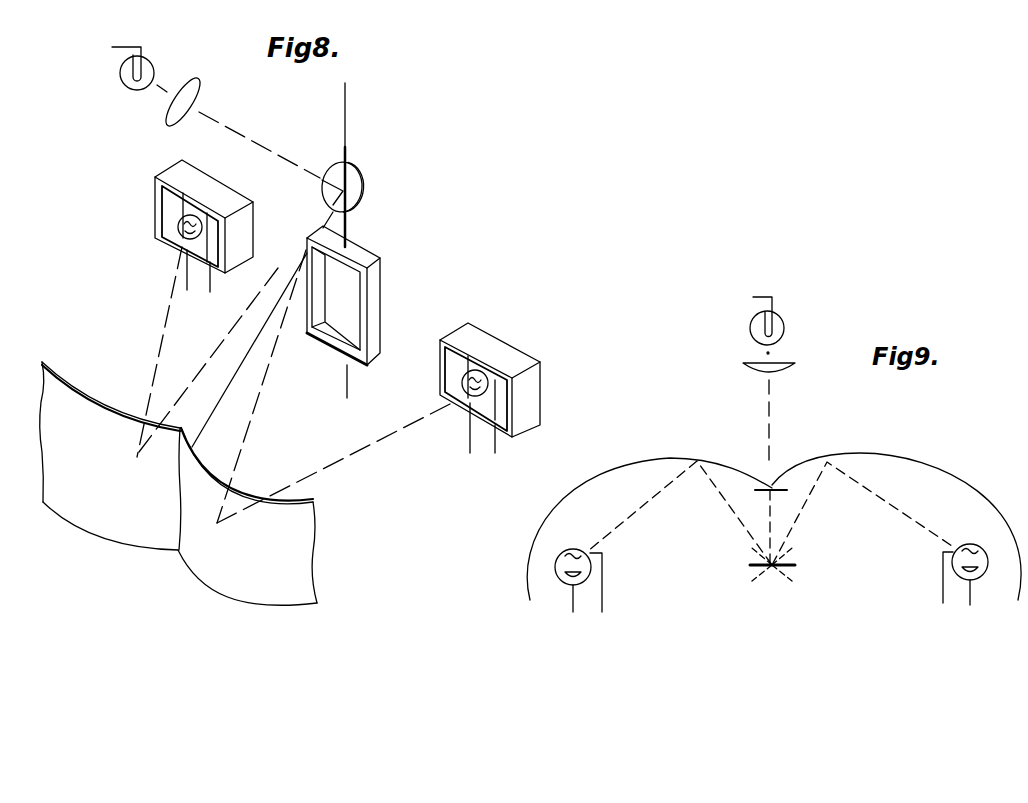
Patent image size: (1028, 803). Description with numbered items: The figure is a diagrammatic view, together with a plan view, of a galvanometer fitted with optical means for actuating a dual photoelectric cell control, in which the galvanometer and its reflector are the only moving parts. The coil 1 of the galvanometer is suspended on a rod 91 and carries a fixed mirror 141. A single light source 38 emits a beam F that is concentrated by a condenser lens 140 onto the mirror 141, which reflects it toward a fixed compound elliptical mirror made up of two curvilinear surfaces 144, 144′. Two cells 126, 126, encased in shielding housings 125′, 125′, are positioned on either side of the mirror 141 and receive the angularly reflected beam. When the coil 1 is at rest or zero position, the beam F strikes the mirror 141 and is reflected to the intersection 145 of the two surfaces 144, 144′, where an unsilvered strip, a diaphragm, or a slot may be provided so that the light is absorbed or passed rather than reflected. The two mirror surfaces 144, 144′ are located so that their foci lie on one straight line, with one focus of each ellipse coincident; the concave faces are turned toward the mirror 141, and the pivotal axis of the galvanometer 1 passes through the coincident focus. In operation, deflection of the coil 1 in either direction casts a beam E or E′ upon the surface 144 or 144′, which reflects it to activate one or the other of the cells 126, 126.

In FIG. 8, the coil 1 is at (377, 290).
In FIG. 8, the light source 38 is at (128, 88).
In FIG. 9, the light source 38 is at (784, 325).
In FIG. 8, the rod 91 is at (347, 100).
In FIG. 8, the housing 125′ is at (237, 225).
In FIG. 8, the cell 126 is at (182, 224).
In FIG. 9, the cell 126 is at (560, 581).
In FIG. 8, the condenser lens 140 is at (195, 85).
In FIG. 9, the condenser lens 140 is at (783, 365).
In FIG. 8, the mirror 141 is at (363, 182).
In FIG. 9, the mirror 141 is at (795, 563).
In FIG. 8, the elliptical mirror surface 144 is at (57, 445).
In FIG. 9, the elliptical mirror surface 144 is at (602, 479).
In FIG. 8, the elliptical mirror surface 144′ is at (300, 537).
In FIG. 9, the elliptical mirror surface 144′ is at (933, 463).
In FIG. 8, the intersection 145 is at (176, 500).
In FIG. 9, the intersection 145 is at (775, 484).
In FIG. 8, the beam E is at (211, 358).
In FIG. 9, the beam E is at (728, 502).
In FIG. 8, the beam E′ is at (250, 432).
In FIG. 9, the beam E′ is at (803, 500).
In FIG. 8, the beam F is at (278, 148).
In FIG. 9, the beam F is at (772, 437).